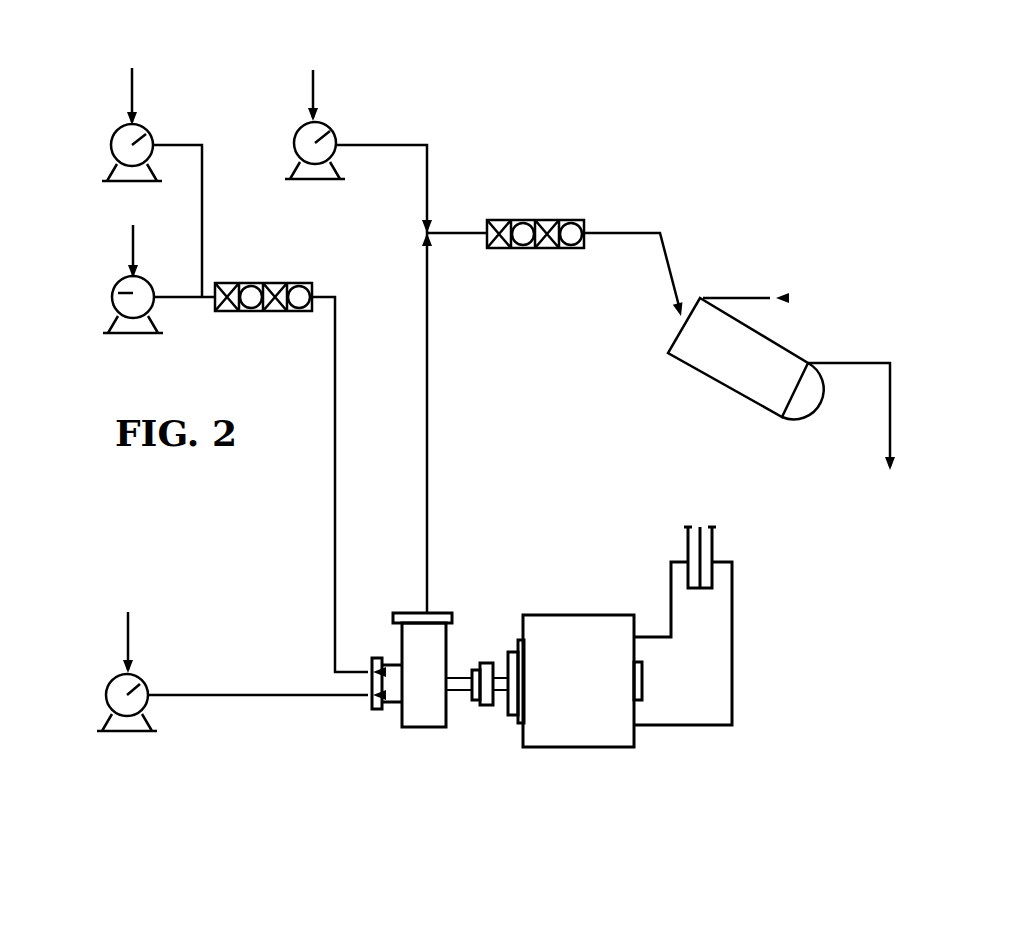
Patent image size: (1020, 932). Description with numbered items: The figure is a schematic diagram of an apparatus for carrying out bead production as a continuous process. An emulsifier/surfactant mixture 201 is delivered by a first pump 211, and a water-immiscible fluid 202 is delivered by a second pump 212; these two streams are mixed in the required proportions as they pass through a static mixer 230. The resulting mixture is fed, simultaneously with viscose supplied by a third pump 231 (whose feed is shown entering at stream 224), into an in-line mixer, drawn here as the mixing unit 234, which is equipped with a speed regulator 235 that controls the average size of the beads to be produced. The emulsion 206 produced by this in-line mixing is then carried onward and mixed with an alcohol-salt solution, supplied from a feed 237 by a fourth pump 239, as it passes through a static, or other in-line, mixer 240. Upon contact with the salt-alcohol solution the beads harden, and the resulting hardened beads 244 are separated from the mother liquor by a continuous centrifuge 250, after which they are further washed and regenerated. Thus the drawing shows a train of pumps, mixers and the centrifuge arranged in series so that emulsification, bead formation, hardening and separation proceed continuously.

The emulsifier/surfactant mixture 201 is at (140, 80).
The first pump 211 is at (148, 130).
The water-immiscible fluid 202 is at (130, 235).
The second pump 212 is at (114, 284).
The static mixer 230 is at (255, 285).
The third feed stream 237 is at (318, 90).
The fourth pump 239 is at (327, 140).
The emulsion 206 is at (428, 470).
The static, or other in-line mixer 240 is at (530, 218).
The hardened beads 244 is at (774, 302).
The continuous centrifuge 250 is at (766, 357).
The fourth feed stream 224 is at (125, 628).
The third pump 231 is at (138, 692).
The mixing head 234 is at (395, 715).
The speed regulator 235 is at (715, 532).